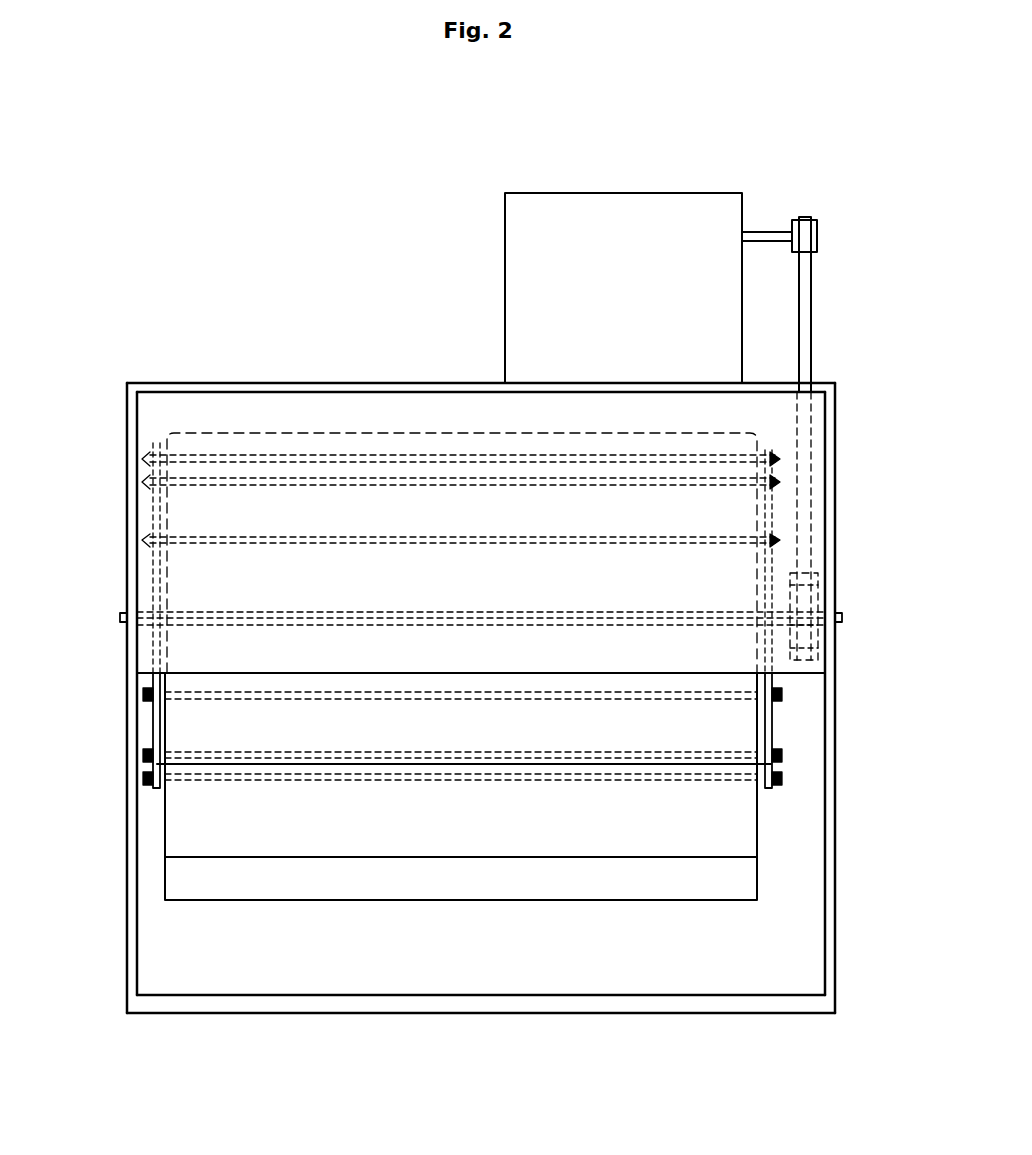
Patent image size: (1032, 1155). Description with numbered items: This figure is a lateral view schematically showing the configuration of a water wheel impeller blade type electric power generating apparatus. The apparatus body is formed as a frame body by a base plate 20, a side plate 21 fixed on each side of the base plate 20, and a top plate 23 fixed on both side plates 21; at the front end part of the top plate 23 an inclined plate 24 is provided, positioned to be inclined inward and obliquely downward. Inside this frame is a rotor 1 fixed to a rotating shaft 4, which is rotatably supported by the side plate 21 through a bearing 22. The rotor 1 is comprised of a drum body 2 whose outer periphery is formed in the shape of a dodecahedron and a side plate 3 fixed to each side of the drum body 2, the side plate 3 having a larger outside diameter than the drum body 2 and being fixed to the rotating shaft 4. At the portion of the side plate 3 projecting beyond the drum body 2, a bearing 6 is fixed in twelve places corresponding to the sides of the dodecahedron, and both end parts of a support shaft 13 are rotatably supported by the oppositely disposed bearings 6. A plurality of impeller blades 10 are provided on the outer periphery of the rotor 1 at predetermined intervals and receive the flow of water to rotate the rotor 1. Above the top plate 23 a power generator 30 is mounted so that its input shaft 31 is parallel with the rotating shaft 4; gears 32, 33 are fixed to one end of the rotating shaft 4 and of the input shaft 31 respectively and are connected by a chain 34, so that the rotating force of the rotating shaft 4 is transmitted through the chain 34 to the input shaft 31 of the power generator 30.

The rotor 1 is at (480, 609).
The drum body 2 is at (165, 830).
The side plate 3 is at (157, 723).
The rotating shaft 4 is at (843, 617).
The bearing 6 is at (157, 781).
The impeller blade 10 is at (548, 873).
The support shaft 13 is at (246, 455).
The base plate 20 is at (410, 1013).
The side plate 21 is at (130, 492).
The bearing 22 is at (125, 628).
The top plate 23 is at (347, 383).
The inclined plate 24 is at (185, 573).
The power generator 30 is at (521, 266).
The input shaft 31 is at (770, 232).
The gear 32 is at (823, 575).
The gear 33 is at (818, 236).
The chain 34 is at (805, 311).